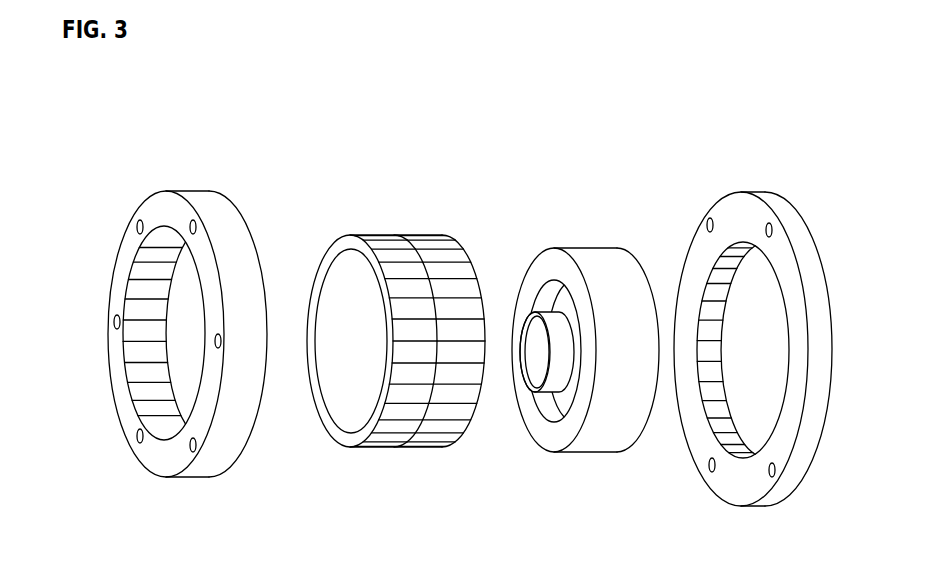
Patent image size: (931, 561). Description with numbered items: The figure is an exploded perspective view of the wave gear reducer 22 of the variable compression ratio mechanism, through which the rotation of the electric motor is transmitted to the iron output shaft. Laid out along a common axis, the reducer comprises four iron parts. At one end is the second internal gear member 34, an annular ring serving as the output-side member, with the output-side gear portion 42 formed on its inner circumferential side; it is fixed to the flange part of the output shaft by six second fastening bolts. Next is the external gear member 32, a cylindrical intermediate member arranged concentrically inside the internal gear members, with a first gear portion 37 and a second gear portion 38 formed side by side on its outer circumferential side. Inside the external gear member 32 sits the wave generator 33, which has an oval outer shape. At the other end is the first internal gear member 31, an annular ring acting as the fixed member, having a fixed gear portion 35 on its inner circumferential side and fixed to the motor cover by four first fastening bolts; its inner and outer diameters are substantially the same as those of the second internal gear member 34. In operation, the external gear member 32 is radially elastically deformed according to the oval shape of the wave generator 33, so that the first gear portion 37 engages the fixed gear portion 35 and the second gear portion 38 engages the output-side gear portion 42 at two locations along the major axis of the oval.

The wave gear reducer 22 is at (676, 139).
The first internal gear member 31 is at (738, 321).
The external gear member 32 is at (396, 329).
The wave generator 33 is at (583, 258).
The second internal gear member 34 is at (204, 331).
The fixed gear portion 35 is at (710, 343).
The first gear portion 37 is at (448, 415).
The second gear portion 38 is at (397, 425).
The output-side gear portion 42 is at (140, 387).